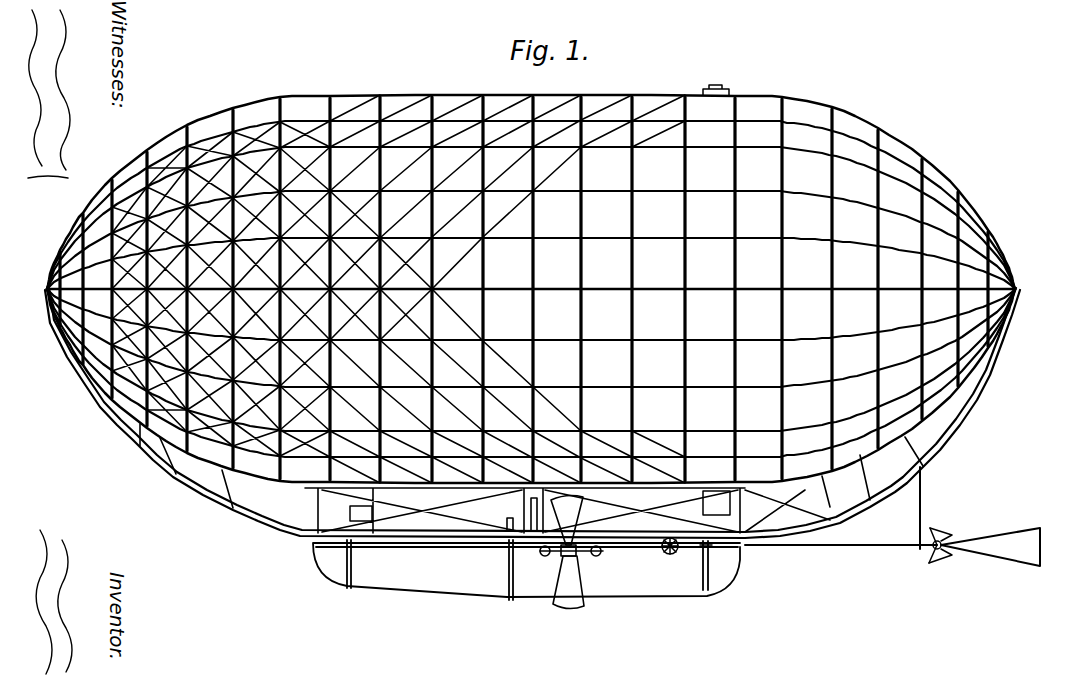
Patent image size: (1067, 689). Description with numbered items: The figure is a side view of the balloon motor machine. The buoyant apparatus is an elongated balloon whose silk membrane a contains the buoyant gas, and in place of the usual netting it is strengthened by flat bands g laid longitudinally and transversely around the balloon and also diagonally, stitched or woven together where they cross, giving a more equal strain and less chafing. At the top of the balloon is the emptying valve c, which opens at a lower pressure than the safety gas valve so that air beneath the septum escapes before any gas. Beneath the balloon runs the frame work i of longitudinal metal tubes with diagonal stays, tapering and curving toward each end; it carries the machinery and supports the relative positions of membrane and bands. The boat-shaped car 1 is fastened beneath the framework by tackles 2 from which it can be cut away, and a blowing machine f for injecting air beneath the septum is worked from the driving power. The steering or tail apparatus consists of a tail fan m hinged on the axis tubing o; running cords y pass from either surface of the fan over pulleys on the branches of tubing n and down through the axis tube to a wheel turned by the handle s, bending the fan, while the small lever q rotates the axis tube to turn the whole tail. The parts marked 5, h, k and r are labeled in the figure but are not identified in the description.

The car 1 is at (526, 570).
The tackles 2 is at (533, 565).
The central longitudinal girder 5 is at (531, 283).
The balloon membrane a is at (524, 289).
The emptying valve c is at (724, 83).
The flat bands g is at (531, 289).
The diagonal braces h is at (398, 289).
The frame work i is at (532, 413).
The blowing machine f is at (383, 517).
The small lever q is at (692, 513).
The handle s is at (657, 547).
The propeller shaft k is at (590, 552).
The car bracket r is at (713, 557).
The axis tubing o is at (841, 515).
The branches of tubing n is at (930, 544).
The running cord y is at (946, 546).
The tail fan m is at (990, 547).